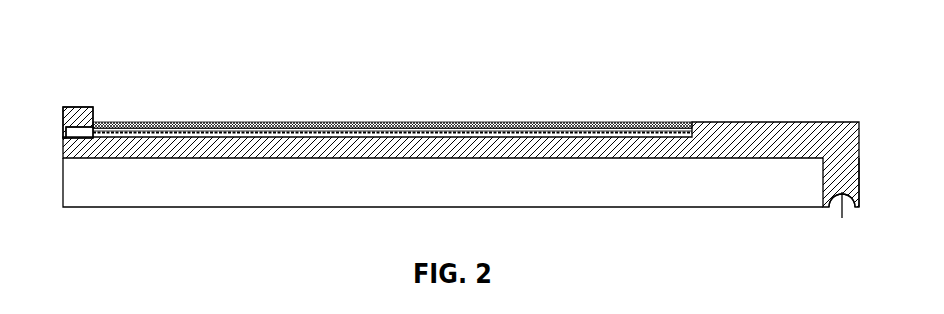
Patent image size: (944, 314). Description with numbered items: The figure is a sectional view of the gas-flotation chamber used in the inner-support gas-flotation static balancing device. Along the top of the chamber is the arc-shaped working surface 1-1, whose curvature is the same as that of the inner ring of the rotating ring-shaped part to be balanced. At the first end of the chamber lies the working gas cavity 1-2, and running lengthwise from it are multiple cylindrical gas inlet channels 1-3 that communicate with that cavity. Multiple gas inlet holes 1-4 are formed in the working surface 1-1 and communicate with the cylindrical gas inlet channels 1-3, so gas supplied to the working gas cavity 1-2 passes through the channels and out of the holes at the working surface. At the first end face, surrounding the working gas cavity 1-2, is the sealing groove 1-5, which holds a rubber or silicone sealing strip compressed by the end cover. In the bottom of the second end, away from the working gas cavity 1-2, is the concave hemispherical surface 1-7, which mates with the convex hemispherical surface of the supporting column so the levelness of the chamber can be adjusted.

The working surface 1-1 is at (708, 124).
The working gas cavity 1-2 is at (70, 137).
The cylindrical gas inlet channels 1-3 is at (440, 130).
The gas inlet holes 1-4 is at (493, 125).
The sealing groove 1-5 is at (80, 113).
The concave hemispherical surface 1-7 is at (842, 192).